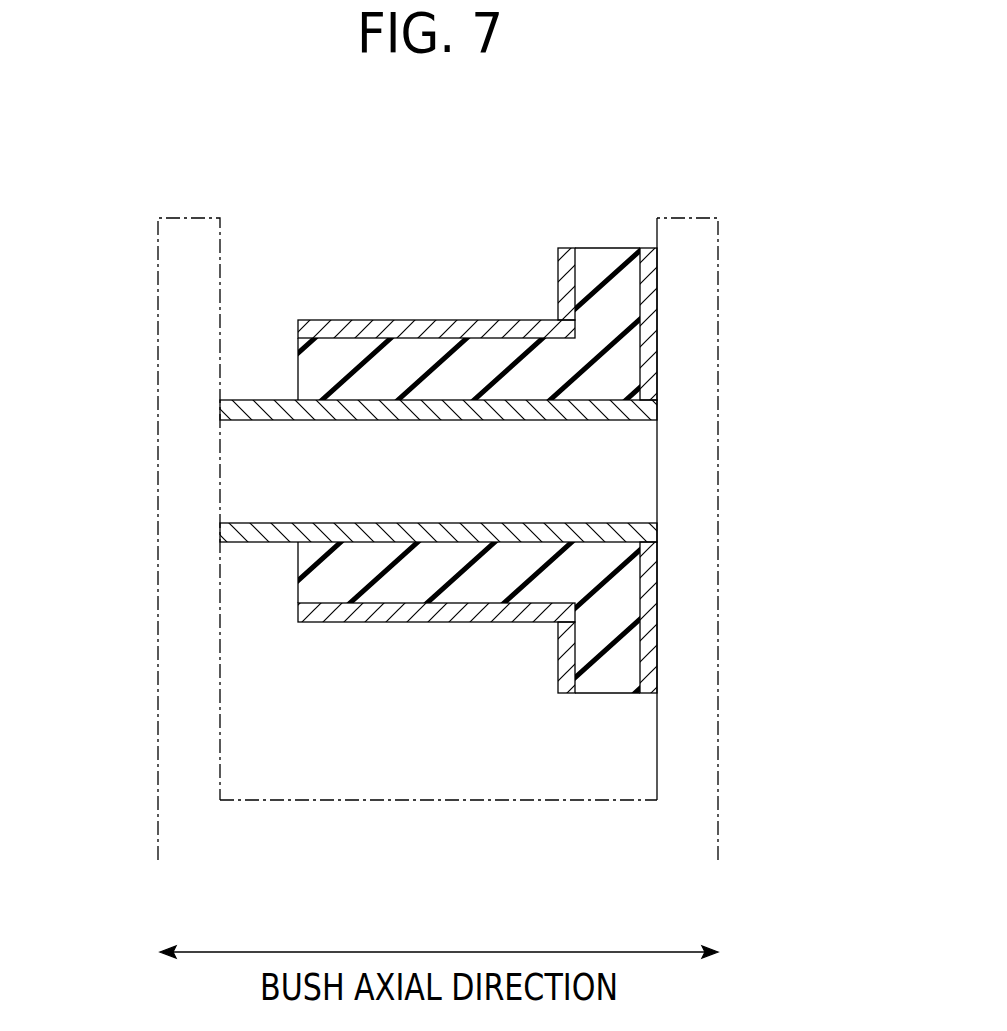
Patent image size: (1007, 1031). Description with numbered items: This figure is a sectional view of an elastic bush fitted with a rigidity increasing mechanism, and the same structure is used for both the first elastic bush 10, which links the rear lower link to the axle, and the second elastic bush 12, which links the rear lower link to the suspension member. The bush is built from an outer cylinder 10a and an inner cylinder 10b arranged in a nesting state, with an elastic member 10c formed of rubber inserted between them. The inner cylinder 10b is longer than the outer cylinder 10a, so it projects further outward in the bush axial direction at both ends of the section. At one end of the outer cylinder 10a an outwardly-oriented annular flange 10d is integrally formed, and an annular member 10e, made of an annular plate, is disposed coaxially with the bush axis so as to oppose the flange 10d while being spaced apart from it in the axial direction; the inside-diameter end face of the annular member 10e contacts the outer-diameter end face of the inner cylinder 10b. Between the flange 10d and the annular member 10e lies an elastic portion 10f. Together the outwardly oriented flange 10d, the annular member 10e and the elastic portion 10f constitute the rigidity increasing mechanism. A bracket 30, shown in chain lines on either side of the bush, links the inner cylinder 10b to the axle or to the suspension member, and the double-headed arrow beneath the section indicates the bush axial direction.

The first elastic bush 10 is at (602, 208).
The second elastic bush 12 is at (484, 476).
The outer cylinder 10a is at (367, 320).
The inner cylinder 10b is at (378, 532).
The elastic member 10c is at (483, 580).
The outwardly-oriented annular flange 10d is at (558, 281).
The annular member 10e is at (648, 360).
The elastic portion 10f is at (617, 297).
The bracket 30 is at (158, 540).